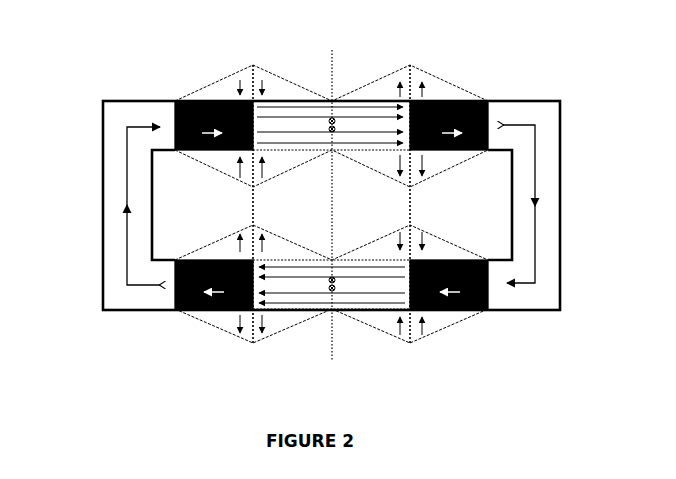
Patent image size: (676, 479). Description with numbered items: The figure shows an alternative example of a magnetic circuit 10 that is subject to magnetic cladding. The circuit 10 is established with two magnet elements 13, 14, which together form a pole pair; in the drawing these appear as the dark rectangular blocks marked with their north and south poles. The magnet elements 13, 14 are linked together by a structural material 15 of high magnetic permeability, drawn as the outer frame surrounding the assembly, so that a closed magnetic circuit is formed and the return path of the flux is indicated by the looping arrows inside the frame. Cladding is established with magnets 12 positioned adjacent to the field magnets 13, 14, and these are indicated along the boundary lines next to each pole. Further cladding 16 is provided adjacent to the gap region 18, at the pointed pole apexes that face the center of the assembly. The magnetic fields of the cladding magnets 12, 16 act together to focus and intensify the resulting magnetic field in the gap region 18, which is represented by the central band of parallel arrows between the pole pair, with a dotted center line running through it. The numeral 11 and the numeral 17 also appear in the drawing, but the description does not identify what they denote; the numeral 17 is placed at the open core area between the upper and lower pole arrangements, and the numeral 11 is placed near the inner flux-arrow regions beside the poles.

The magnetic circuit 10 is at (76, 186).
The permanent magnet 11 is at (432, 88).
The cladding magnets 12 is at (248, 77).
The magnet element 13 is at (192, 94).
The magnet element 14 is at (471, 94).
The structural material 15 is at (98, 198).
The cladding 16 is at (260, 61).
The central core region 17 is at (332, 205).
The gap region 18 is at (331, 206).